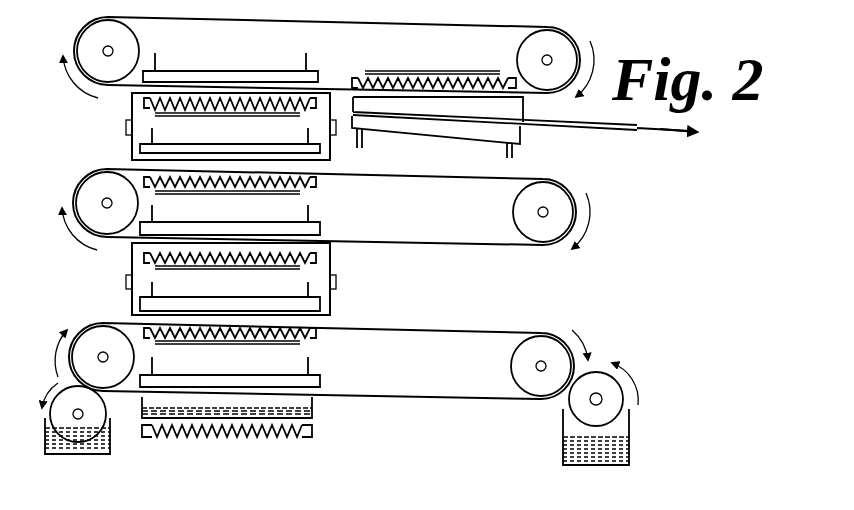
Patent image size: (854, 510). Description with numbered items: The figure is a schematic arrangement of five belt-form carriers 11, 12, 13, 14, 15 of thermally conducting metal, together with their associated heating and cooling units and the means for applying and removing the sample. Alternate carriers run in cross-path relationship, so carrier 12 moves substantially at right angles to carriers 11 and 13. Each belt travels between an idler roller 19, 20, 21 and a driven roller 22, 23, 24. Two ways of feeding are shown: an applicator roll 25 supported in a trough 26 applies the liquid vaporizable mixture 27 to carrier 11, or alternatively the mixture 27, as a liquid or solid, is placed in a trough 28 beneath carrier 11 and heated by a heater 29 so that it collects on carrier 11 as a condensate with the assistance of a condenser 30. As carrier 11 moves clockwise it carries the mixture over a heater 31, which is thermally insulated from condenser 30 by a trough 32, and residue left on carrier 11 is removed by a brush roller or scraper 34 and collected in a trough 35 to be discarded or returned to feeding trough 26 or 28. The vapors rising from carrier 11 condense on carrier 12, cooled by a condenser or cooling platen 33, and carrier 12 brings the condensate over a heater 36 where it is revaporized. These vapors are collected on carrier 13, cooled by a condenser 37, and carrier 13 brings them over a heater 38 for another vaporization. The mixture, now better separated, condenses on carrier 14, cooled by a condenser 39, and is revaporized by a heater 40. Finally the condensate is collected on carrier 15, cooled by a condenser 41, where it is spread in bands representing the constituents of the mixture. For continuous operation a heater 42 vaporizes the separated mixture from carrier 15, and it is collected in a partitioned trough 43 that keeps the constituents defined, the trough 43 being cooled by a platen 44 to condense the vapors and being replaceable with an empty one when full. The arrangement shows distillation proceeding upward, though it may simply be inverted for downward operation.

The carrier 11 is at (477, 324).
The carrier 12 is at (128, 245).
The carrier 13 is at (510, 176).
The carrier 14 is at (132, 93).
The carrier 15 is at (372, 17).
The idler roller 19 is at (508, 363).
The idler roller 20 is at (512, 206).
The idler roller 21 is at (515, 53).
The driven roller 22 is at (90, 333).
The driven roller 23 is at (82, 190).
The driven roller 24 is at (82, 36).
The applicator roll 25 is at (60, 385).
The trough 26 is at (110, 437).
The vaporizable mixture 27 is at (45, 445).
The trough 28 is at (312, 402).
The heater 29 is at (245, 435).
The condenser 30 is at (272, 375).
The heater 31 is at (195, 338).
The trough 32 is at (462, 72).
The condenser 33 is at (272, 297).
The brush roller or scraper 34 is at (623, 398).
The trough 35 is at (632, 432).
The heater 36 is at (197, 264).
The condenser 37 is at (272, 222).
The heater 38 is at (197, 188).
The condenser 39 is at (278, 143).
The heater 40 is at (188, 106).
The condenser 41 is at (217, 72).
The heater 42 is at (378, 73).
The trough 43 is at (525, 103).
The platen 44 is at (430, 130).